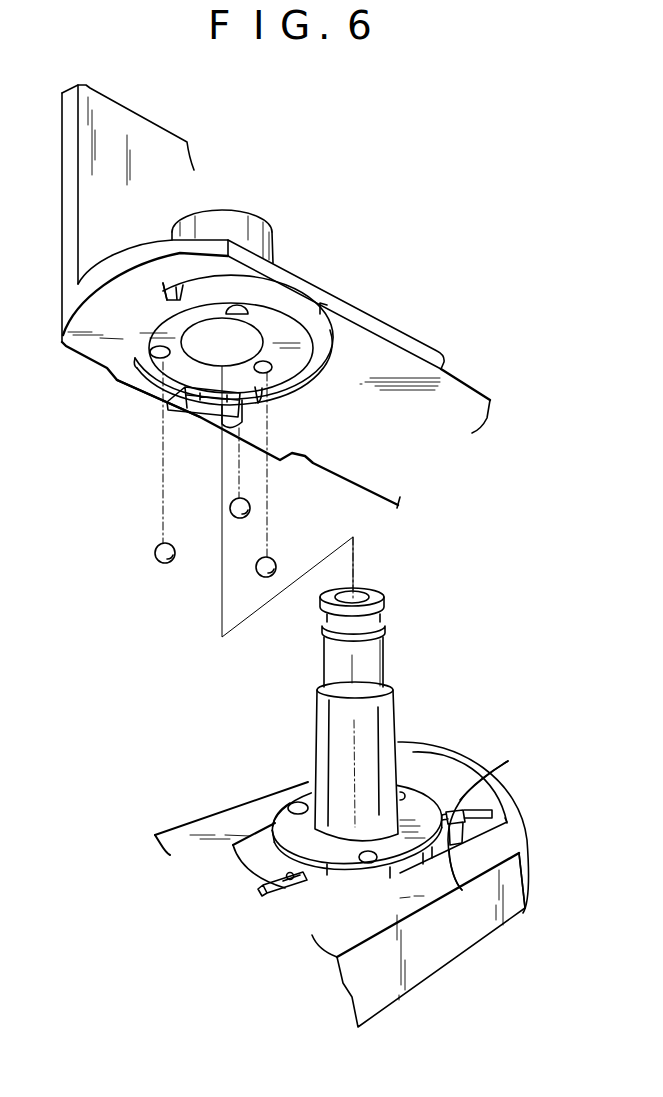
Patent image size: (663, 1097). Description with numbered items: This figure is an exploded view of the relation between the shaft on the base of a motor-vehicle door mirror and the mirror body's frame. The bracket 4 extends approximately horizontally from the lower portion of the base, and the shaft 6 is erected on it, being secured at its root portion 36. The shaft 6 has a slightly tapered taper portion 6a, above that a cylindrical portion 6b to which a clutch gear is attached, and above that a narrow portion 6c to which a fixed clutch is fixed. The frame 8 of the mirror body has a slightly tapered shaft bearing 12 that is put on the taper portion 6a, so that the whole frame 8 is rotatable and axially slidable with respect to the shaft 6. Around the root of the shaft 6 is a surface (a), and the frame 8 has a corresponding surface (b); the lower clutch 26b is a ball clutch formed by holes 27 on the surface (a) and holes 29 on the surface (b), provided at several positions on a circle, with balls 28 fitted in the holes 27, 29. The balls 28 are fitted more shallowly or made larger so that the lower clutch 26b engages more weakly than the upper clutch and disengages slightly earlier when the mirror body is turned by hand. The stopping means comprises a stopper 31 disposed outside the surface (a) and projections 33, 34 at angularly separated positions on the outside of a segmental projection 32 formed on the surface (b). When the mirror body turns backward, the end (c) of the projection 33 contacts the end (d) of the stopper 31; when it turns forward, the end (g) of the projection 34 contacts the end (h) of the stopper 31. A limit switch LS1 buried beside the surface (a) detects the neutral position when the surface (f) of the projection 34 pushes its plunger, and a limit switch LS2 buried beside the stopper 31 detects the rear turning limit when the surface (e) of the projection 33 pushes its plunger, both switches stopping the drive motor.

The bracket 4 is at (508, 903).
The shaft 6 is at (353, 714).
The taper portion 6a is at (380, 738).
The cylindrical portion 6b is at (380, 682).
The narrow portion 6c is at (377, 623).
The frame 8 is at (90, 316).
The shaft bearing 12 is at (262, 232).
The lower clutch 26b is at (143, 490).
The holes 27 is at (367, 863).
The balls 28 is at (160, 560).
The holes 29 is at (273, 369).
The stopper 31 is at (520, 853).
The segmental projection 32 is at (292, 322).
The projection 33 is at (182, 414).
The projection 34 is at (159, 296).
The root portion 36 is at (455, 772).
The limit switch LS1 is at (265, 889).
The limit switch LS2 is at (492, 805).
The surface a is at (273, 832).
The surface b is at (155, 390).
The end c is at (242, 410).
The end d is at (492, 774).
The surface e is at (223, 420).
The surface f is at (167, 293).
The end g is at (182, 283).
The end h is at (458, 883).